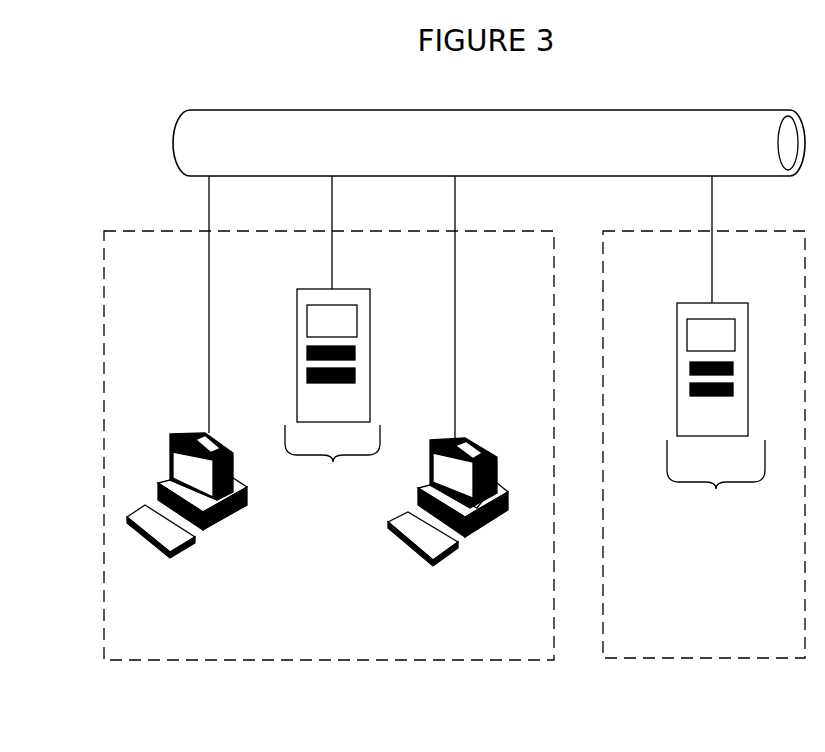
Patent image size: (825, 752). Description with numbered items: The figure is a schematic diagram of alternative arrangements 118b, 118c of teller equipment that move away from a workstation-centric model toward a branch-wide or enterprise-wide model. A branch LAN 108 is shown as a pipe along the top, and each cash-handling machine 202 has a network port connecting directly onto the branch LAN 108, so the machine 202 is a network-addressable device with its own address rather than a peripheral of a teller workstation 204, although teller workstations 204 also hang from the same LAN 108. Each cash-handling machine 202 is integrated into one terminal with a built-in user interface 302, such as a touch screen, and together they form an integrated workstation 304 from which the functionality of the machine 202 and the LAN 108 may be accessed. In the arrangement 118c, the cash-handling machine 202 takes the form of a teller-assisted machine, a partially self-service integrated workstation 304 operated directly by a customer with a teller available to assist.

The branch LAN 108 is at (635, 108).
The built-in user interface 302 is at (357, 320).
The cash-handling machine 202 is at (370, 394).
The integrated workstation 304 is at (525, 469).
The teller workstation 204 is at (403, 542).
The alternative arrangement for teller equipment 118b is at (392, 660).
The teller-assisted machine arrangement 118c is at (698, 658).